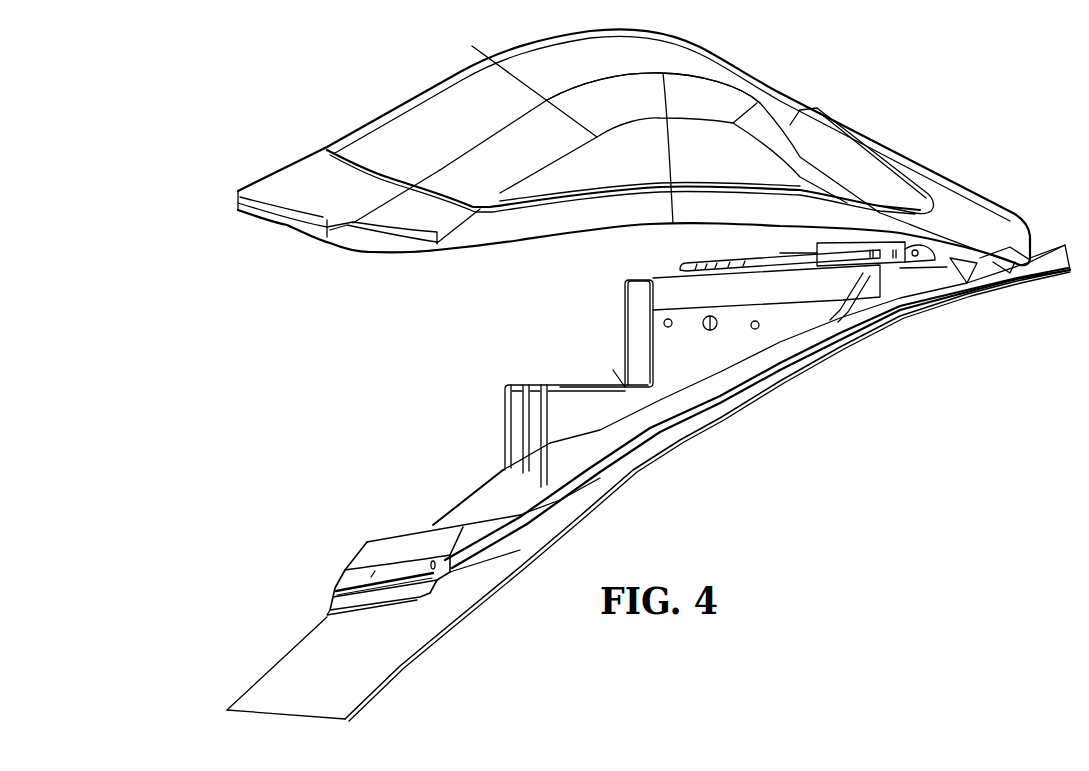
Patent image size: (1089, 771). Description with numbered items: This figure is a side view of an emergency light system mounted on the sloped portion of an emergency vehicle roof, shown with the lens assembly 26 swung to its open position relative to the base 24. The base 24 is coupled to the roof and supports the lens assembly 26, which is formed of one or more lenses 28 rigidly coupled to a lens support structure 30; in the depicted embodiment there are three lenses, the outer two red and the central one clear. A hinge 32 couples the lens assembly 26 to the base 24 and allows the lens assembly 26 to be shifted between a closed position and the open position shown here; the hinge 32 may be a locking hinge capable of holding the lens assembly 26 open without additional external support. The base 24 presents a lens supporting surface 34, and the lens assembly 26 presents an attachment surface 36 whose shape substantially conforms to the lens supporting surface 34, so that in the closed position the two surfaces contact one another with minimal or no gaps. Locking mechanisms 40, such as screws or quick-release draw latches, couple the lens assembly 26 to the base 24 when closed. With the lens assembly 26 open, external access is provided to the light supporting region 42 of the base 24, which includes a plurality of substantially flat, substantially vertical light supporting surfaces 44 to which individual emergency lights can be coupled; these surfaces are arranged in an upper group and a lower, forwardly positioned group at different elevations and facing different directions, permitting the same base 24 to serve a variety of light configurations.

The base 24 is at (324, 546).
The lens assembly 26 is at (413, 90).
The lenses 28 is at (548, 58).
The lens support structure 30 is at (948, 215).
The hinge 32 is at (880, 255).
The lens supporting surface 34 is at (437, 580).
The attachment surface 36 is at (372, 250).
The locking mechanisms 40 is at (360, 207).
The light supporting region 42 is at (456, 354).
The light supporting surfaces 44 is at (540, 413).